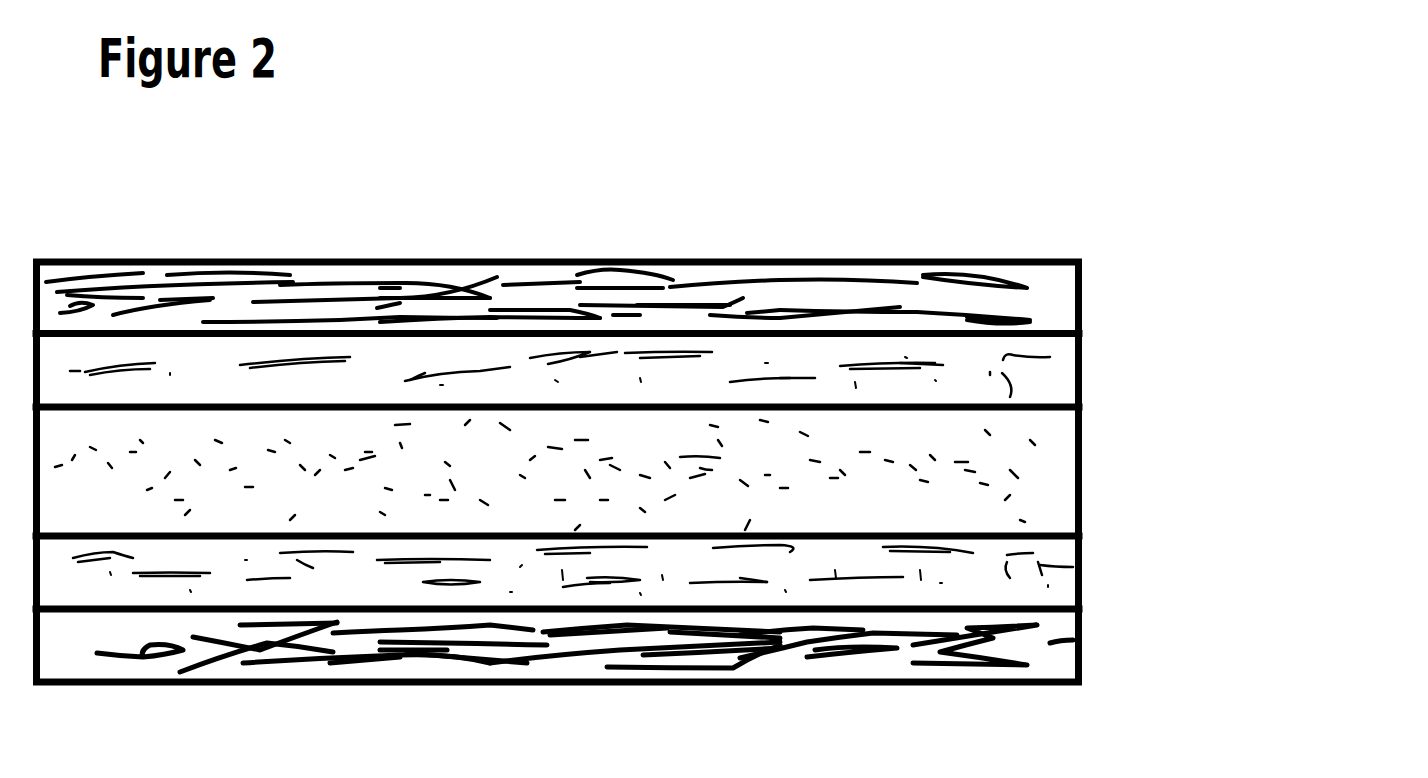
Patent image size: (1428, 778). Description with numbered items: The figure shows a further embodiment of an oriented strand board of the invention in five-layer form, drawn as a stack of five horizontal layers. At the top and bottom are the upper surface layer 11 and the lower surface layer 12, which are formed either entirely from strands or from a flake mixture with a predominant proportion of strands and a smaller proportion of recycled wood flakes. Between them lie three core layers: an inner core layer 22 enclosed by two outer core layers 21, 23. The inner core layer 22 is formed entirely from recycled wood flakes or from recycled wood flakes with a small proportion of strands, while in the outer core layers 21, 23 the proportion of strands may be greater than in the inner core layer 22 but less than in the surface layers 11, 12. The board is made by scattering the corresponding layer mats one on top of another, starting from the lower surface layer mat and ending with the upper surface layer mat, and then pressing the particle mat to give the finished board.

The upper surface layer 11 is at (1033, 293).
The outer core layer 21 is at (1058, 372).
The inner core layer 22 is at (1033, 480).
The outer core layer 23 is at (1050, 567).
The lower surface layer 12 is at (1048, 647).